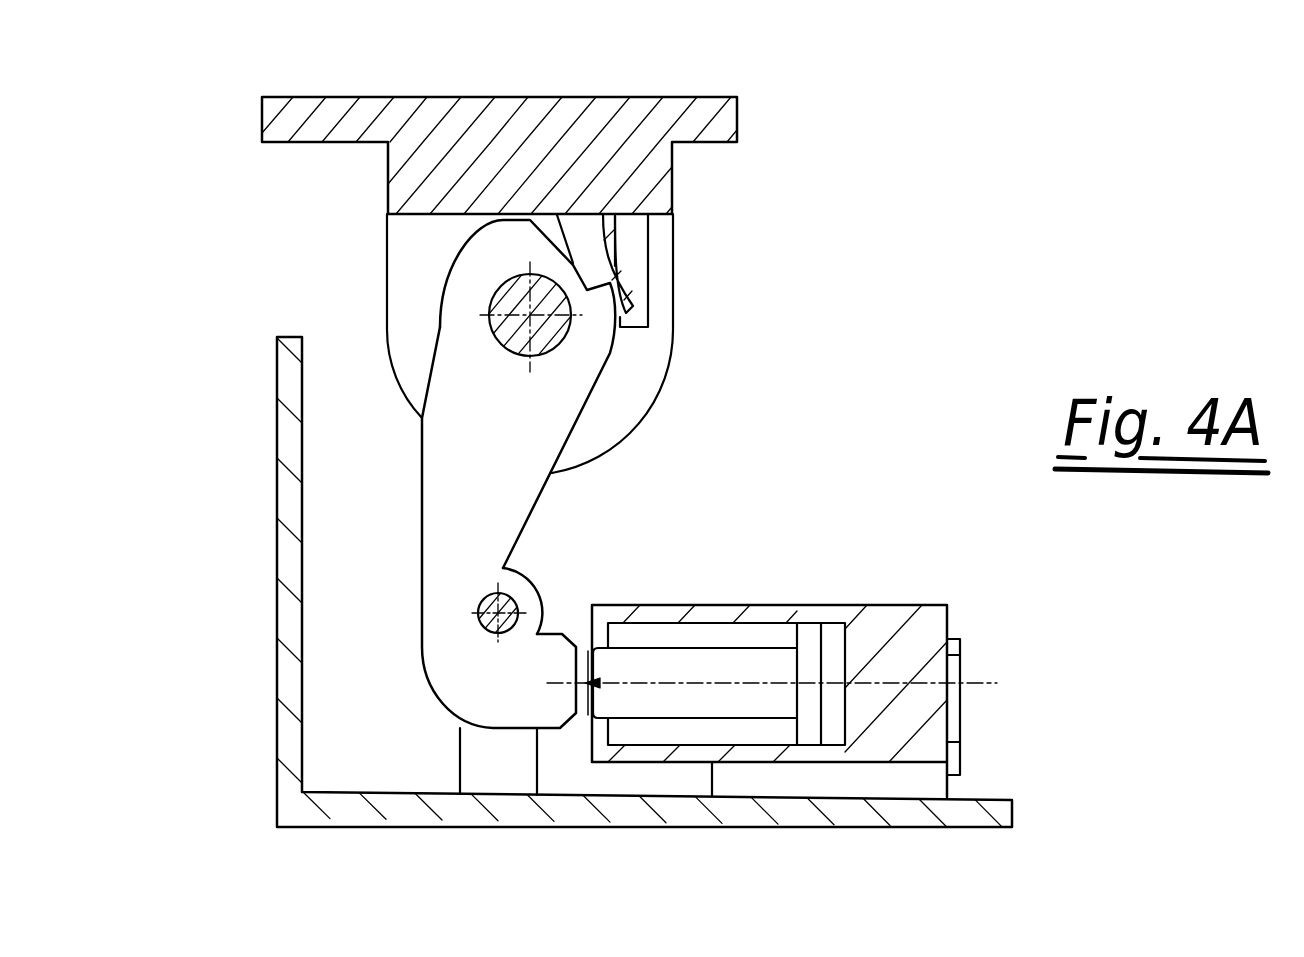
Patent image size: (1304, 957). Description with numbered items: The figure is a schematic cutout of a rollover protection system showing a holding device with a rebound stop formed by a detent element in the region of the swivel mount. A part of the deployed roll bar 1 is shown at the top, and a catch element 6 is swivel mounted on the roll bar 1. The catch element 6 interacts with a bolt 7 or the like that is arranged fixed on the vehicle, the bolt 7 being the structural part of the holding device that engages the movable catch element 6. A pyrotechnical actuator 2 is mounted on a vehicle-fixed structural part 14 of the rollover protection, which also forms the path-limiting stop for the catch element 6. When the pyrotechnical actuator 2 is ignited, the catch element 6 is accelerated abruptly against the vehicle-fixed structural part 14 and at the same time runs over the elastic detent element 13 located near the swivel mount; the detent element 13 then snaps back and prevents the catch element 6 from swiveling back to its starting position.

The roll bar 1 is at (530, 120).
The pyrotechnical actuator 2 is at (790, 607).
The catch element 6 is at (517, 503).
The bolt 7 is at (508, 601).
The elastic detent element 13 is at (619, 263).
The vehicle-fixed structural part 14 is at (275, 608).